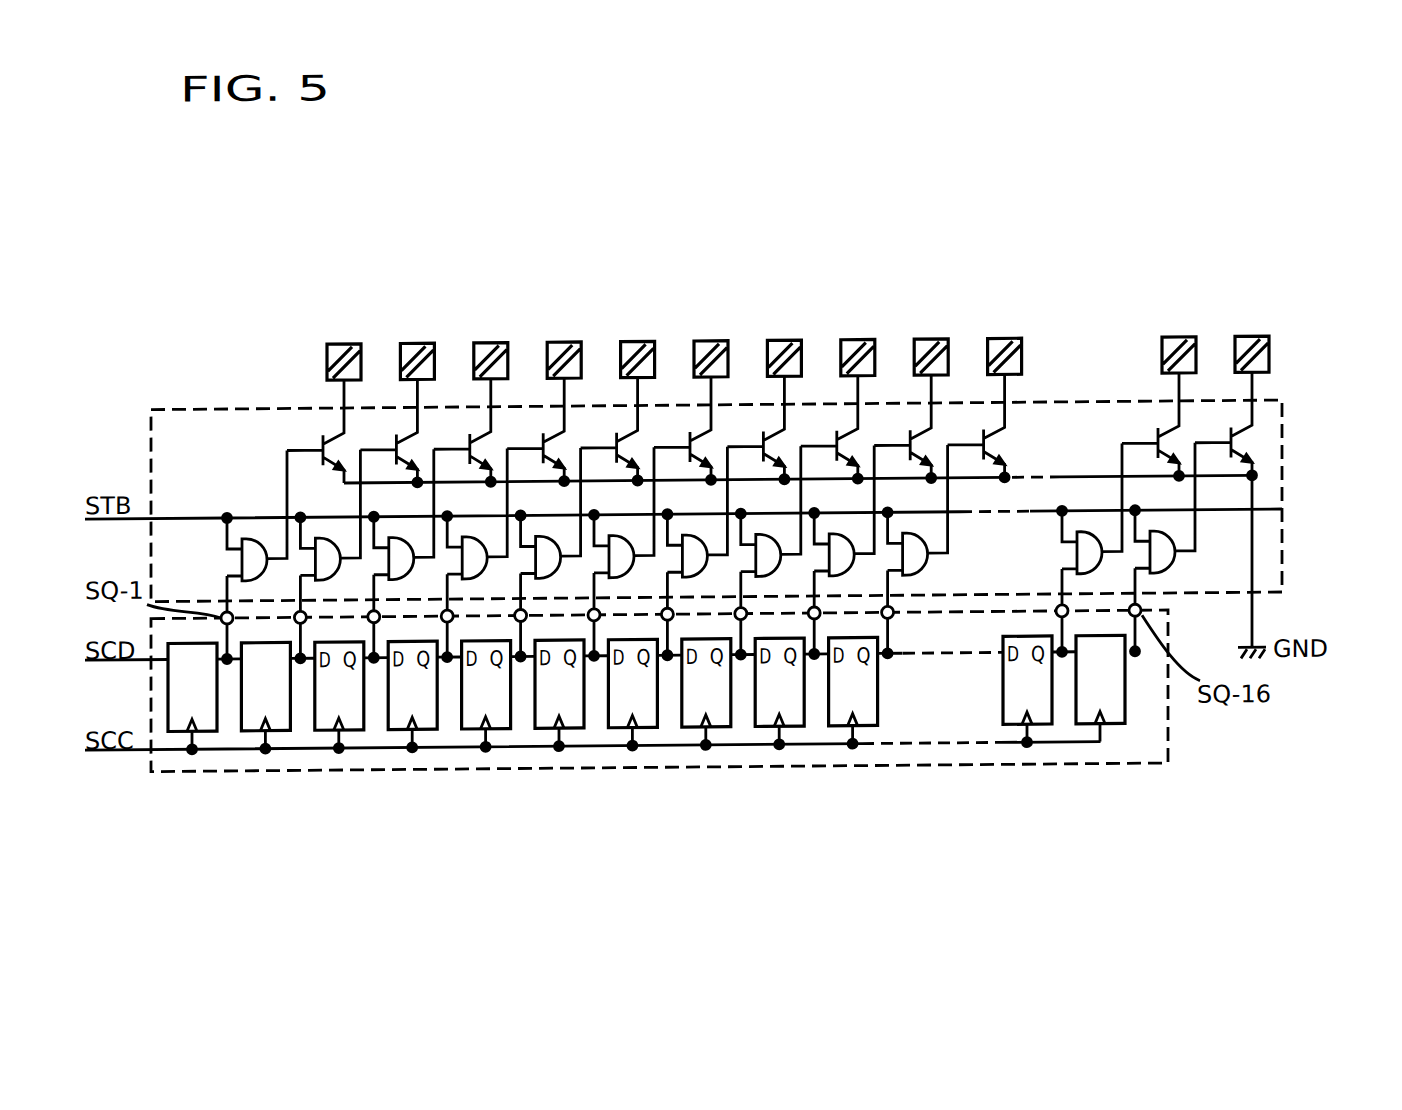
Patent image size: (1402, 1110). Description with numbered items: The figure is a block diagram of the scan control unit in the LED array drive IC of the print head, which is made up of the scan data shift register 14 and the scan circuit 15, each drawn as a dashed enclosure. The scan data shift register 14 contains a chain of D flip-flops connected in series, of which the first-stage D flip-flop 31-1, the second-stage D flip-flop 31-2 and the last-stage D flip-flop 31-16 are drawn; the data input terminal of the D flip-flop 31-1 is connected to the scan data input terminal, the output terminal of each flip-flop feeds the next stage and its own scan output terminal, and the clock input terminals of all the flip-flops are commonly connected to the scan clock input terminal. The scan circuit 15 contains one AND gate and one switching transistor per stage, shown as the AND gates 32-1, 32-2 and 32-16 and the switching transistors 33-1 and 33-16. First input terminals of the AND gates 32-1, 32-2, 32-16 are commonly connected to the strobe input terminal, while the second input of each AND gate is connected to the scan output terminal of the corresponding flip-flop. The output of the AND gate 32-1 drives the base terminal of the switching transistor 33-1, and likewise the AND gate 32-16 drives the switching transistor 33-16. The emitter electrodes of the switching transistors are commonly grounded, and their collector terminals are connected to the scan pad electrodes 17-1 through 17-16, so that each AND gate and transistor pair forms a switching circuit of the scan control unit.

The scan data shift register 14 is at (564, 786).
The scan circuit 15 is at (218, 406).
The scan pad electrode 17-1 is at (350, 344).
The scan pad electrode 17-16 is at (1274, 321).
The D flip-flop 31-1 is at (205, 732).
The D flip-flop 31-2 is at (305, 745).
The D flip-flop 31-16 is at (1126, 738).
The AND gate 32-1 is at (242, 568).
The AND gate 32-2 is at (239, 558).
The AND gate 32-16 is at (1187, 546).
The switching transistor 33-1 is at (330, 440).
The switching transistor 33-16 is at (1277, 406).